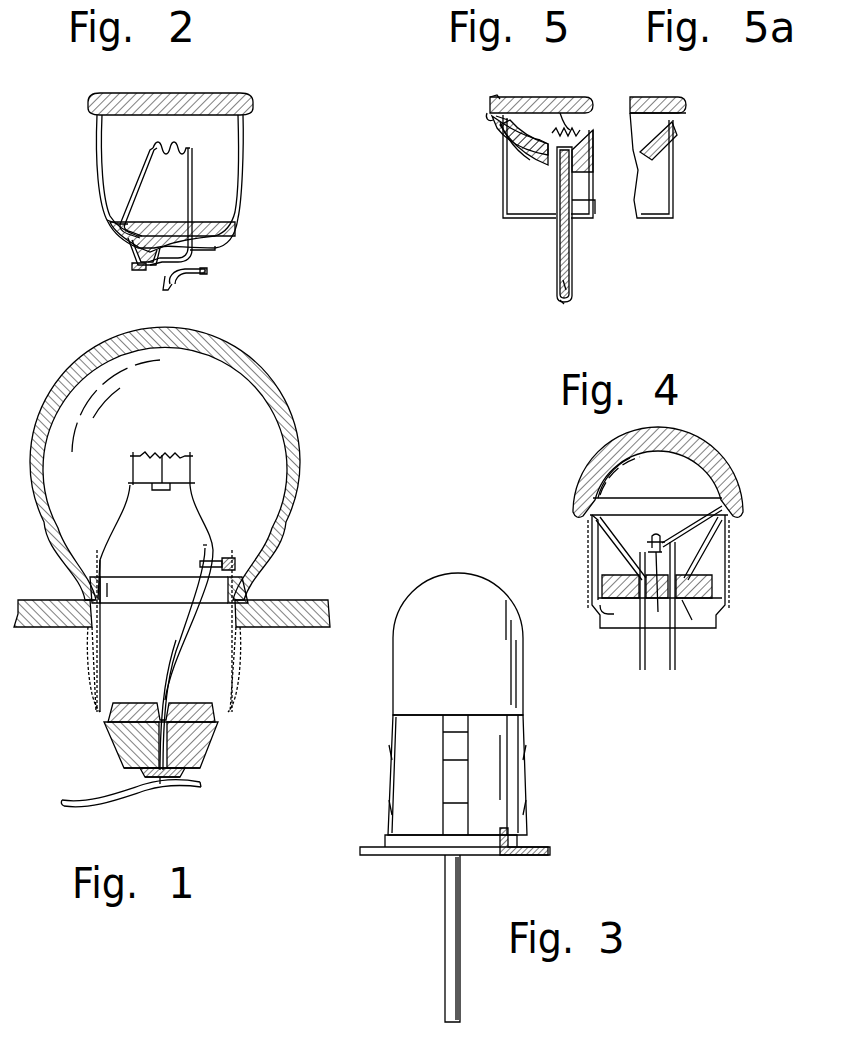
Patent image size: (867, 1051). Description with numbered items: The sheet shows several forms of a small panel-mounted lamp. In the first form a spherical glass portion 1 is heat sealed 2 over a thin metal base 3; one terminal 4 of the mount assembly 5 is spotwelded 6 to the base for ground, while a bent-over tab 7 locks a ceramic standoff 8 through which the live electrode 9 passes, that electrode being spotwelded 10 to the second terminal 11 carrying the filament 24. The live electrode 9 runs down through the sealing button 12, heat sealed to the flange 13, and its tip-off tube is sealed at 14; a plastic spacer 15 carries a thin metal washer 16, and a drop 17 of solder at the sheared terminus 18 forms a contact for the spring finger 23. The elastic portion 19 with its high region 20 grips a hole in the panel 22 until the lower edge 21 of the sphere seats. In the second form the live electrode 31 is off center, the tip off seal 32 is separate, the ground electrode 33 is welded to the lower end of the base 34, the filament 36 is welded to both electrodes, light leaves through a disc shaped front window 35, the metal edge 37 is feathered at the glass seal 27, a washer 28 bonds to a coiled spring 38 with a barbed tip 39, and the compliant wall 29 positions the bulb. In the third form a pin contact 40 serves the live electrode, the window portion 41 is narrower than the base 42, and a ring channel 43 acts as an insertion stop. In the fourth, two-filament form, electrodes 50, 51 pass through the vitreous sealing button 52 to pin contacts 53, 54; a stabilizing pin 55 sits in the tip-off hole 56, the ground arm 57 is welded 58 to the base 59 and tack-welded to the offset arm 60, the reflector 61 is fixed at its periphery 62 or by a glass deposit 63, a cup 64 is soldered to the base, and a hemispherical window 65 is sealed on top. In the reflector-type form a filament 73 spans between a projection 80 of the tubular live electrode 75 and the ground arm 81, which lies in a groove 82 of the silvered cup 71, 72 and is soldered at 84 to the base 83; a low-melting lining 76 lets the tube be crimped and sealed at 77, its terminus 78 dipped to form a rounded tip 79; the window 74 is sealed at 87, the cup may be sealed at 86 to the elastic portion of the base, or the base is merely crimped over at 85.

In FIG. 1, the spherical glass portion 1 is at (288, 410).
In FIG. 1, the heat seal 2 is at (247, 585).
In FIG. 1, the thin metal base 3 is at (240, 655).
In FIG. 1, the terminal 4 is at (122, 521).
In FIG. 1, the mount assembly 5 is at (158, 490).
In FIG. 1, the spotweld 6 is at (96, 545).
In FIG. 1, the tab 7 is at (227, 557).
In FIG. 1, the ceramic standoff 8 is at (200, 563).
In FIG. 1, the live electrode 9 is at (178, 654).
In FIG. 1, the spotweld 10 is at (205, 546).
In FIG. 1, the second terminal 11 is at (206, 510).
In FIG. 1, the sealing button 12 is at (134, 702).
In FIG. 1, the flange 13 is at (106, 724).
In FIG. 1, the heat seal 14 is at (206, 752).
In FIG. 1, the plastic spacer 15 is at (117, 752).
In FIG. 1, the thin metal washer 16 is at (186, 775).
In FIG. 1, the drop of solder 17 is at (144, 775).
In FIG. 1, the sheared terminus 18 is at (153, 787).
In FIG. 1, the elastic portion 19 is at (238, 690).
In FIG. 1, the high region 20 is at (90, 668).
In FIG. 1, the seal 21 is at (85, 598).
In FIG. 1, the panel 22 is at (24, 620).
In FIG. 1, the contact arm 23 is at (70, 808).
In FIG. 1, the filament mount 24 is at (172, 455).
In FIG. 2, the glass seal 27 is at (118, 242).
In FIG. 2, the washer 28 is at (208, 249).
In FIG. 2, the wall of the chamber 29 is at (244, 156).
In FIG. 2, the live electrode 31 is at (193, 183).
In FIG. 2, the tip off seal 32 is at (140, 272).
In FIG. 2, the ground electrode 33 is at (146, 170).
In FIG. 2, the base 34 is at (105, 222).
In FIG. 2, the disc shaped front window 35 is at (146, 98).
In FIG. 2, the filament 36 is at (180, 140).
In FIG. 2, the feathered edge 37 is at (218, 228).
In FIG. 2, the coiled spring 38 is at (208, 272).
In FIG. 2, the barbed tip 39 is at (174, 284).
In FIG. 3, the pin contact 40 is at (446, 925).
In FIG. 3, the window portion 41 is at (401, 678).
In FIG. 3, the base 42 is at (403, 746).
In FIG. 3, the ring channel 43 is at (530, 850).
In FIG. 4, the heat sealed electrode 50 is at (640, 560).
In FIG. 4, the heat sealed electrode 51 is at (700, 572).
In FIG. 4, the sealing button 52 is at (730, 608).
In FIG. 4, the pin contact 53 is at (639, 664).
In FIG. 4, the pin contact 54 is at (677, 664).
In FIG. 4, the stabilizing pin 55 is at (702, 590).
In FIG. 4, the tip-off hole 56 is at (658, 622).
In FIG. 4, the ground arm 57 is at (690, 540).
In FIG. 4, the weld 58 is at (738, 506).
In FIG. 4, the base 59 is at (730, 545).
In FIG. 4, the offset arm 60 is at (654, 534).
In FIG. 4, the reflector 61 is at (614, 540).
In FIG. 4, the periphery 62 is at (590, 522).
In FIG. 4, the deposit 63 is at (686, 610).
In FIG. 4, the cup 64 is at (606, 620).
In FIG. 4, the hemispherical window 65 is at (726, 458).
In FIG. 5, the cup 71 is at (509, 152).
In FIG. 5, the cup 72 is at (590, 160).
In FIG. 5A, the cup 72 is at (665, 165).
In FIG. 5, the filament 73 is at (567, 122).
In FIG. 5, the window 74 is at (590, 97).
In FIG. 5A, the window 74 is at (665, 97).
In FIG. 5, the live electrode 75 is at (556, 257).
In FIG. 5, the lining 76 is at (573, 240).
In FIG. 5, the crimp zone 77 is at (596, 204).
In FIG. 5, the remote terminus 78 is at (572, 281).
In FIG. 5, the rounded tip 79 is at (561, 302).
In FIG. 5, the projection 80 is at (581, 130).
In FIG. 5, the ground arm 81 is at (536, 148).
In FIG. 5, the groove 82 is at (500, 118).
In FIG. 5, the base 83 is at (503, 134).
In FIG. 5, the solder joint 84 is at (487, 113).
In FIG. 5, the crimp 85 is at (494, 96).
In FIG. 5, the elastic portion 86 is at (503, 183).
In FIG. 5A, the elastic portion 86 is at (676, 133).
In FIG. 5A, the heat seal 87 is at (687, 108).